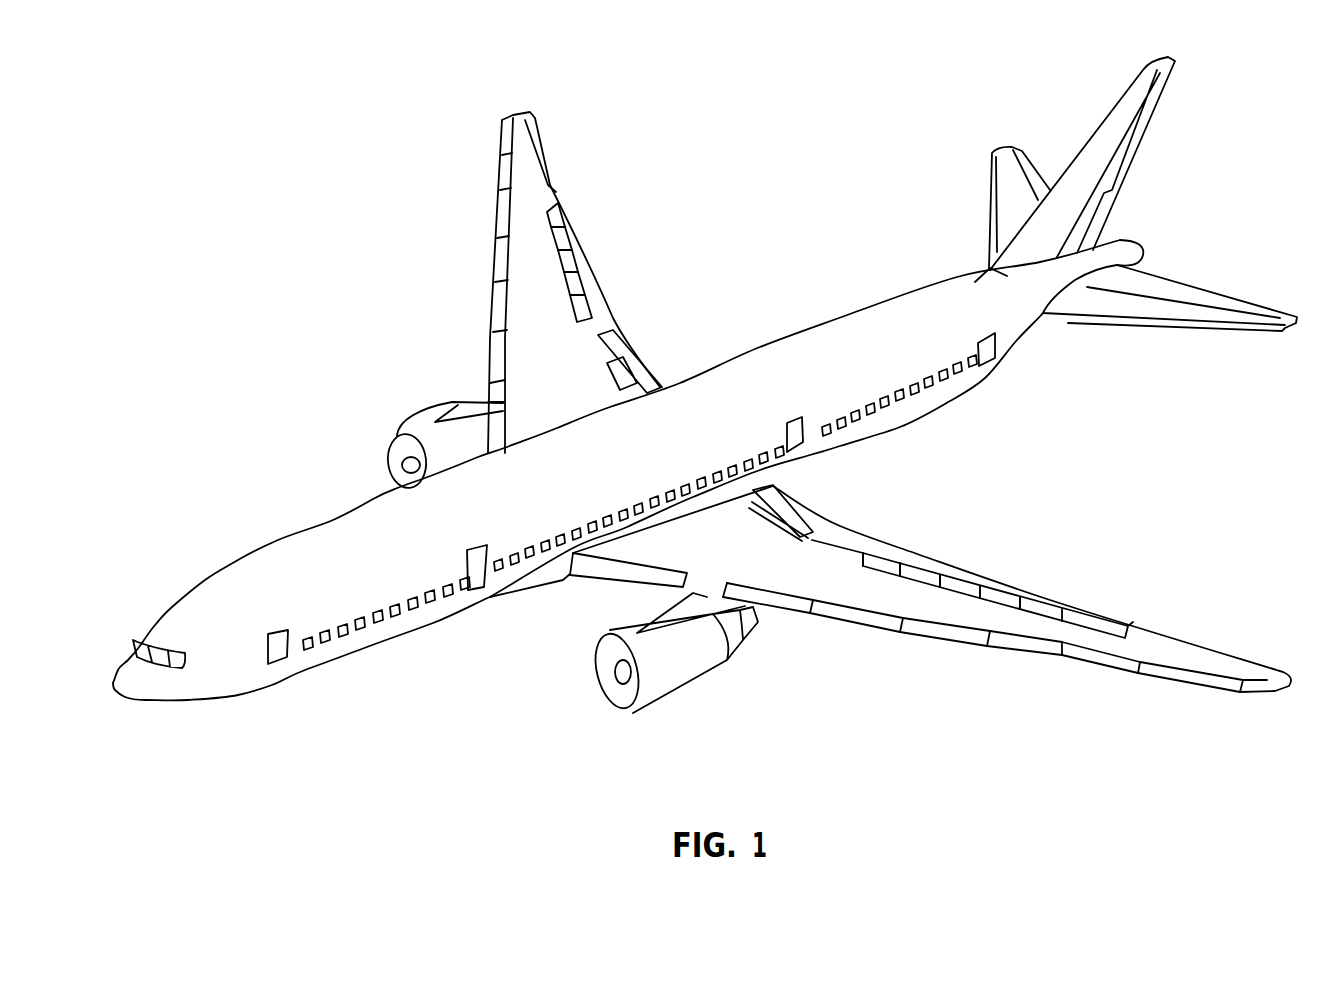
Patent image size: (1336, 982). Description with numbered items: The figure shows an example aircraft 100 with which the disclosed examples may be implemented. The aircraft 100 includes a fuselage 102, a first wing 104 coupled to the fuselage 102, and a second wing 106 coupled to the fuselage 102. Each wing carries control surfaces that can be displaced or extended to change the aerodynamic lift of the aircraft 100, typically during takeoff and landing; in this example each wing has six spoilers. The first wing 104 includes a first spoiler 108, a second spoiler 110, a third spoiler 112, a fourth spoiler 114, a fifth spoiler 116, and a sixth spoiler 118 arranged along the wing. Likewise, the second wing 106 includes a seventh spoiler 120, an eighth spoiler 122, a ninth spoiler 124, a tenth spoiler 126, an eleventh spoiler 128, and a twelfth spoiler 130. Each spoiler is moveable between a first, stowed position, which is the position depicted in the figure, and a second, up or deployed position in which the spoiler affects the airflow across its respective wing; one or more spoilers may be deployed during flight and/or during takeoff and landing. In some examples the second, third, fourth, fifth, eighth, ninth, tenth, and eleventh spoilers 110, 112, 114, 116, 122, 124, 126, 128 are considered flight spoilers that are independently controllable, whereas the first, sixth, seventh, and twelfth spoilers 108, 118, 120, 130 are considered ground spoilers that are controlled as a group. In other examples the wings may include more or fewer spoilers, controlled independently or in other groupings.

The aircraft 100 is at (316, 123).
The fuselage 102 is at (355, 535).
The first wing 104 is at (860, 590).
The second wing 106 is at (543, 290).
The first spoiler 108 is at (1045, 610).
The second spoiler 110 is at (1002, 600).
The third spoiler 112 is at (958, 587).
The fourth spoiler 114 is at (918, 580).
The fifth spoiler 116 is at (880, 562).
The sixth spoiler 118 is at (800, 523).
The seventh spoiler 120 is at (623, 387).
The eighth spoiler 122 is at (577, 308).
The ninth spoiler 124 is at (570, 288).
The tenth spoiler 126 is at (565, 263).
The eleventh spoiler 128 is at (558, 238).
The twelfth spoiler 130 is at (552, 215).